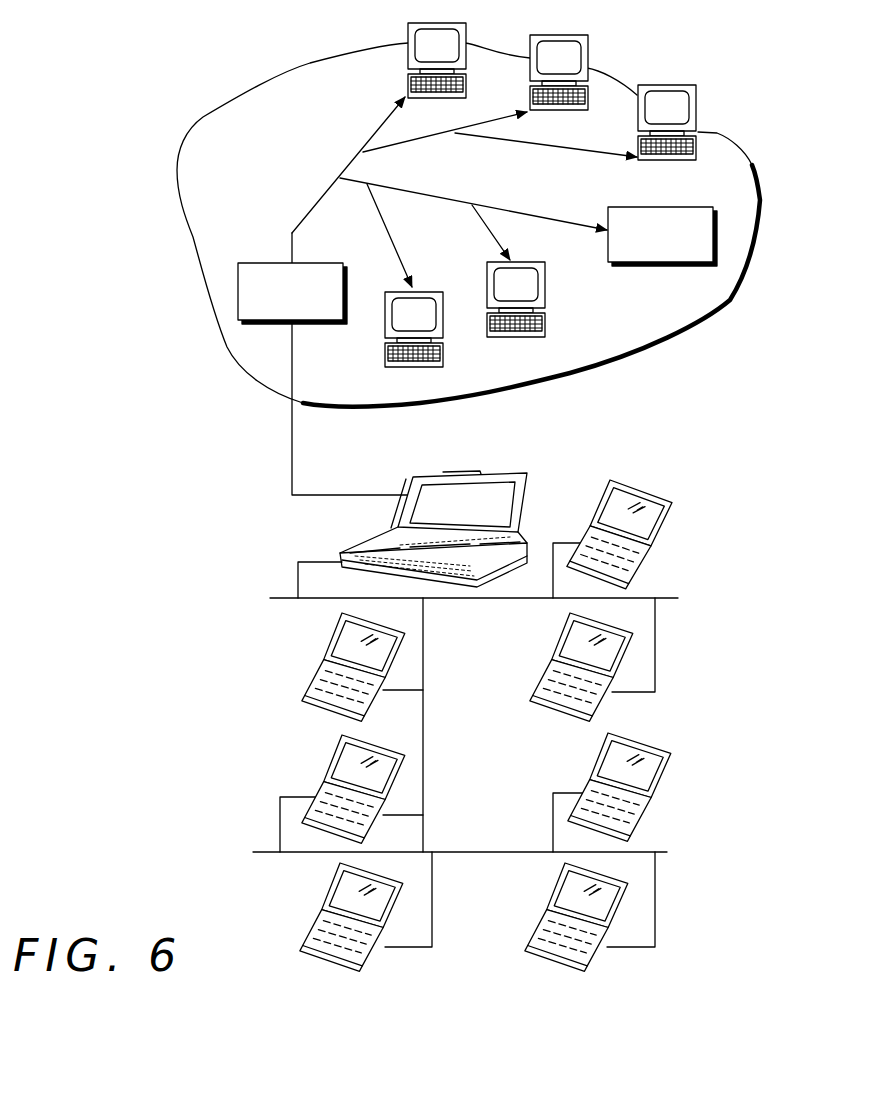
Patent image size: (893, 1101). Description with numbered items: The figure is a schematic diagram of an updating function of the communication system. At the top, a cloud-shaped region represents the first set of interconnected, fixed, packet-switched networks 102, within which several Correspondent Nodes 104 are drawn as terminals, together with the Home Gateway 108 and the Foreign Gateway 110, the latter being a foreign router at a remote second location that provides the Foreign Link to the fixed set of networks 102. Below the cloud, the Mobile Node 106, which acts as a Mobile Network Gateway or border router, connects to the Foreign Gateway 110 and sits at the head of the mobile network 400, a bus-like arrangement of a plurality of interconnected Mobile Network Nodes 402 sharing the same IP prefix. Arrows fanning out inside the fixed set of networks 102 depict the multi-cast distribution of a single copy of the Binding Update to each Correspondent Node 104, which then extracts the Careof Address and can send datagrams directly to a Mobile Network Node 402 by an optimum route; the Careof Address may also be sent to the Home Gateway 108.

The fixed set of networks 102 is at (752, 170).
The Correspondent Node 104 is at (418, 43).
The Mobile Node 106 is at (437, 490).
The Home Gateway 108 is at (670, 207).
The Foreign Gateway 110 is at (267, 262).
The mobile network 400 is at (220, 722).
The Mobile Network Node 402 is at (602, 502).